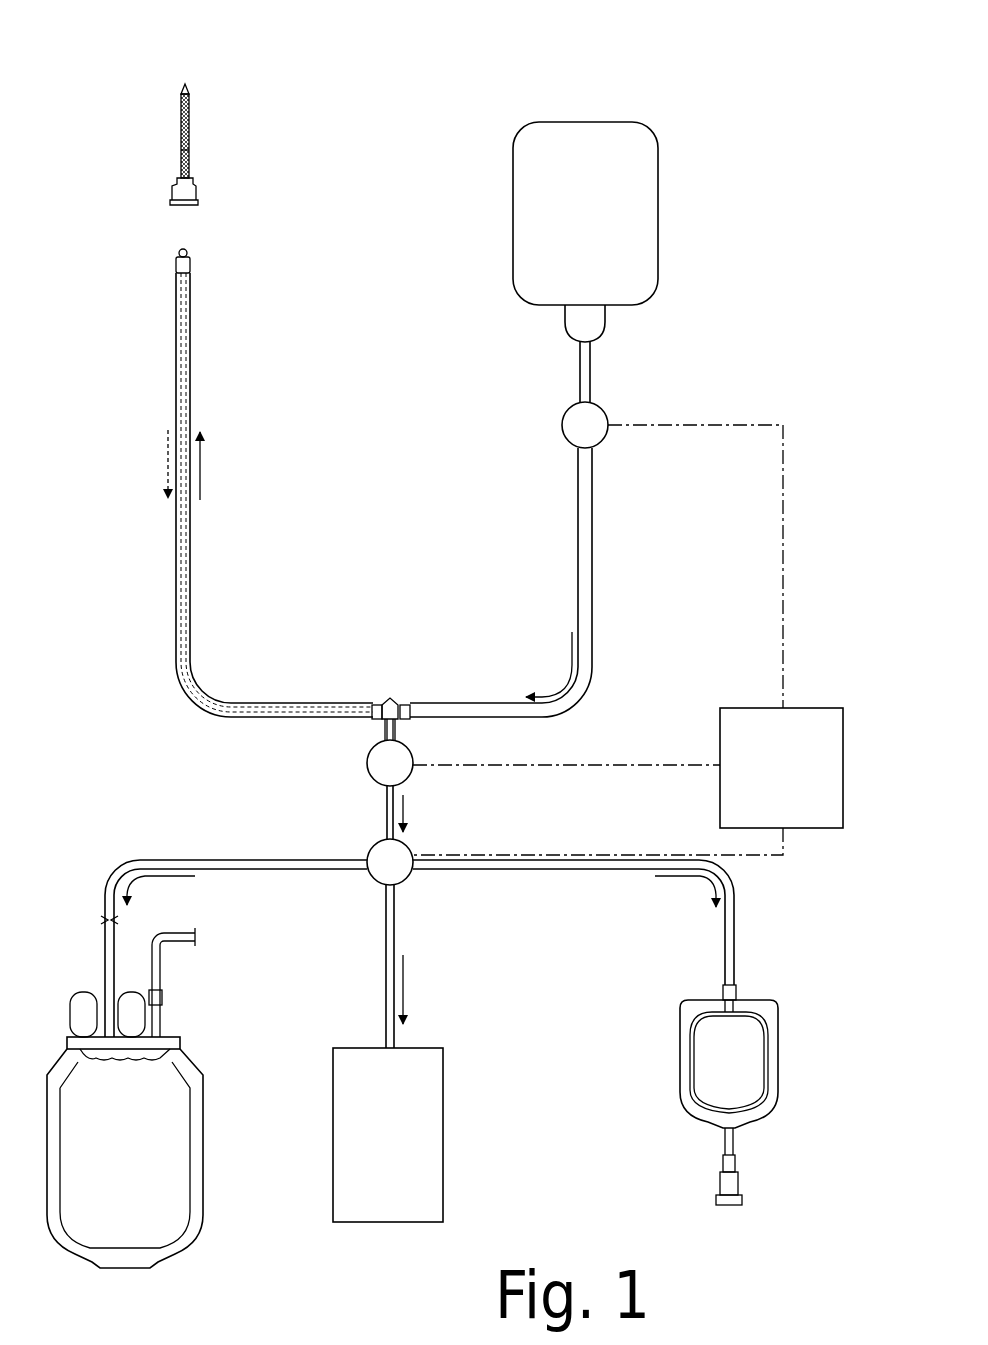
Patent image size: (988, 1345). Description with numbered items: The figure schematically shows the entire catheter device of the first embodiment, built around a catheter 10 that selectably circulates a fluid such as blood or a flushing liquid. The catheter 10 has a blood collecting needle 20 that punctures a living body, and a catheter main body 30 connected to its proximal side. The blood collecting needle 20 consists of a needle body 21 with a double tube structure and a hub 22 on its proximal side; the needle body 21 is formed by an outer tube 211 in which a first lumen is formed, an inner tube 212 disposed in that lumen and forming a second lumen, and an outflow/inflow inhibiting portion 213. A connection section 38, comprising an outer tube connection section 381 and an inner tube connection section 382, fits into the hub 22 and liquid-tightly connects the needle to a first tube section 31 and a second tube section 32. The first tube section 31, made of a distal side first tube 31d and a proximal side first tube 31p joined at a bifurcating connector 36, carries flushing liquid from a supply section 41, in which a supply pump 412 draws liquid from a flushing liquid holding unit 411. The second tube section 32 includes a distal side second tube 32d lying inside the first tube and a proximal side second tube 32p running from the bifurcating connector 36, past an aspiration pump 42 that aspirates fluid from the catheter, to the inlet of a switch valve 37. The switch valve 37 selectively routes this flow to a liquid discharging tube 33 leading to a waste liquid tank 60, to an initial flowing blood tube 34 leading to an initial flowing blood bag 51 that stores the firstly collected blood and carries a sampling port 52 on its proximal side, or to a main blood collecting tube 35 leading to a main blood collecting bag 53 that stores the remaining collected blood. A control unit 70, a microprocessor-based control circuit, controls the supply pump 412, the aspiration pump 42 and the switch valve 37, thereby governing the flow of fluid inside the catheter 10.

The catheter 10 is at (414, 104).
The blood collecting needle 20 is at (93, 83).
The needle body 21 is at (180, 118).
The outer tube 211 is at (189, 136).
The inner tube 212 is at (189, 155).
The outflow/inflow inhibiting portion 213 is at (189, 92).
The hub 22 is at (176, 192).
The catheter main body 30 is at (311, 486).
The first tube section 31 is at (470, 613).
The distal side first tube 31d is at (335, 715).
The proximal side first tube 31p is at (437, 712).
The second tube section 32 is at (296, 740).
The distal side second tube 32d is at (330, 720).
The proximal side second tube 32p is at (386, 816).
The liquid discharging tube 33 is at (395, 930).
The initial flowing blood tube 34 is at (736, 910).
The main blood collecting tube 35 is at (137, 858).
The bifurcating connector 36 is at (403, 716).
The switch valve 37 is at (406, 878).
The connection section 38 is at (76, 245).
The outer tube connection section 381 is at (175, 265).
The inner tube connection section 382 is at (178, 255).
The supply section 41 is at (759, 284).
The flushing liquid holding unit 411 is at (640, 275).
The supply pump 412 is at (606, 412).
The aspiration pump 42 is at (414, 772).
The initial flowing blood bag 51 is at (762, 1060).
The sampling port 52 is at (742, 1198).
The main blood collecting bag 53 is at (192, 1196).
The waste liquid tank 60 is at (438, 1157).
The control unit 70 is at (812, 716).